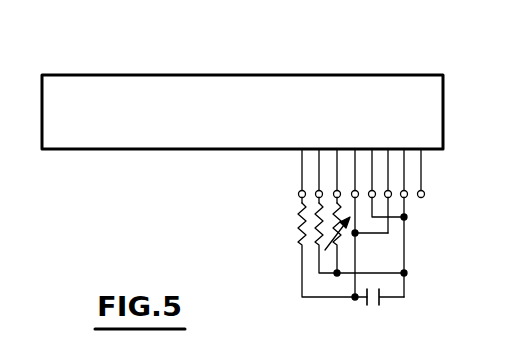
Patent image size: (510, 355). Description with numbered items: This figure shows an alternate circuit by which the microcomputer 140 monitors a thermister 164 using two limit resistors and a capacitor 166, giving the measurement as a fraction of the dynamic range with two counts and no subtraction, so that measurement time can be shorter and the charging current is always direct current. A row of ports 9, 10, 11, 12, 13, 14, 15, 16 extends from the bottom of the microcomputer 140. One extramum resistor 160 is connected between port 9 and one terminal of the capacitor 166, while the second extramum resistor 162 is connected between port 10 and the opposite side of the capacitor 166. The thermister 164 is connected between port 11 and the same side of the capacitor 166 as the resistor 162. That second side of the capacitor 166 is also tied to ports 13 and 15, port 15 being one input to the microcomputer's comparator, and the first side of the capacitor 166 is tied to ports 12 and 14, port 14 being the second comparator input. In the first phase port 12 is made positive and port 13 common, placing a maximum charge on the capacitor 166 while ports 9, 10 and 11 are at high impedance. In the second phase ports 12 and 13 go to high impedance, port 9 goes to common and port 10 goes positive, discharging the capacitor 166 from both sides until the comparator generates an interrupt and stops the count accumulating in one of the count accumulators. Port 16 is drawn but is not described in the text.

The microcomputer 140 is at (254, 75).
The port 9 is at (298, 176).
The port 10 is at (311, 176).
The port 11 is at (328, 176).
The port 12 is at (362, 224).
The port 13 is at (378, 183).
The port 14 is at (380, 191).
The port 15 is at (396, 223).
The pin 16 is at (413, 173).
The extramum resistor 160 is at (300, 222).
The second extramum resistor 162 is at (318, 234).
The thermister 164 is at (349, 228).
The capacitor 166 is at (382, 303).